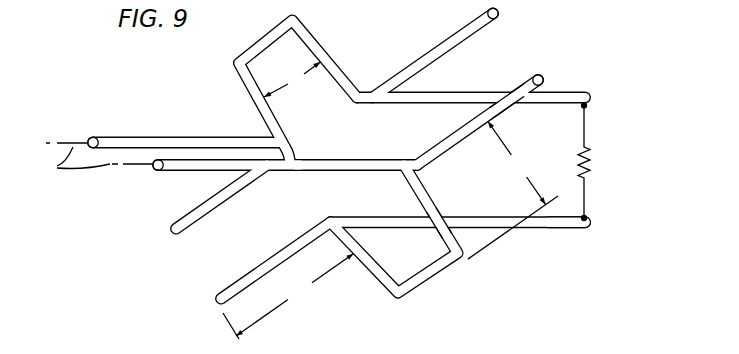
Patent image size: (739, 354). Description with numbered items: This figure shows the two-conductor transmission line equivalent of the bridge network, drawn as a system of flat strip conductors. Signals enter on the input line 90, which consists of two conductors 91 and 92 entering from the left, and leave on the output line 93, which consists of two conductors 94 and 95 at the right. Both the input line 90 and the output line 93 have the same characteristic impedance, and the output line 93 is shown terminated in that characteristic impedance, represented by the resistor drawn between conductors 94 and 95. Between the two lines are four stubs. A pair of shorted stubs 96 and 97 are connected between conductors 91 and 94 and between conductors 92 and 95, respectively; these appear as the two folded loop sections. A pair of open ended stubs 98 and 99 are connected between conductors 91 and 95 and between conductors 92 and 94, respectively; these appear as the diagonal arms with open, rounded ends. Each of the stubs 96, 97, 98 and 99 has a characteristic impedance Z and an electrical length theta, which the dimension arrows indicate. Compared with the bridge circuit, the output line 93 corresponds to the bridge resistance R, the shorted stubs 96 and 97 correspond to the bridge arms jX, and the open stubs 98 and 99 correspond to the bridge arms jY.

The input line 90 is at (184, 103).
The conductor 91 is at (122, 136).
The conductor 92 is at (193, 171).
The output line 93 is at (584, 260).
The conductor 94 is at (571, 93).
The conductor 95 is at (547, 229).
The shorted stub 96 is at (368, 14).
The shorted stub 97 is at (464, 308).
The open ended stub 98 is at (202, 276).
The open ended stub 99 is at (562, 41).